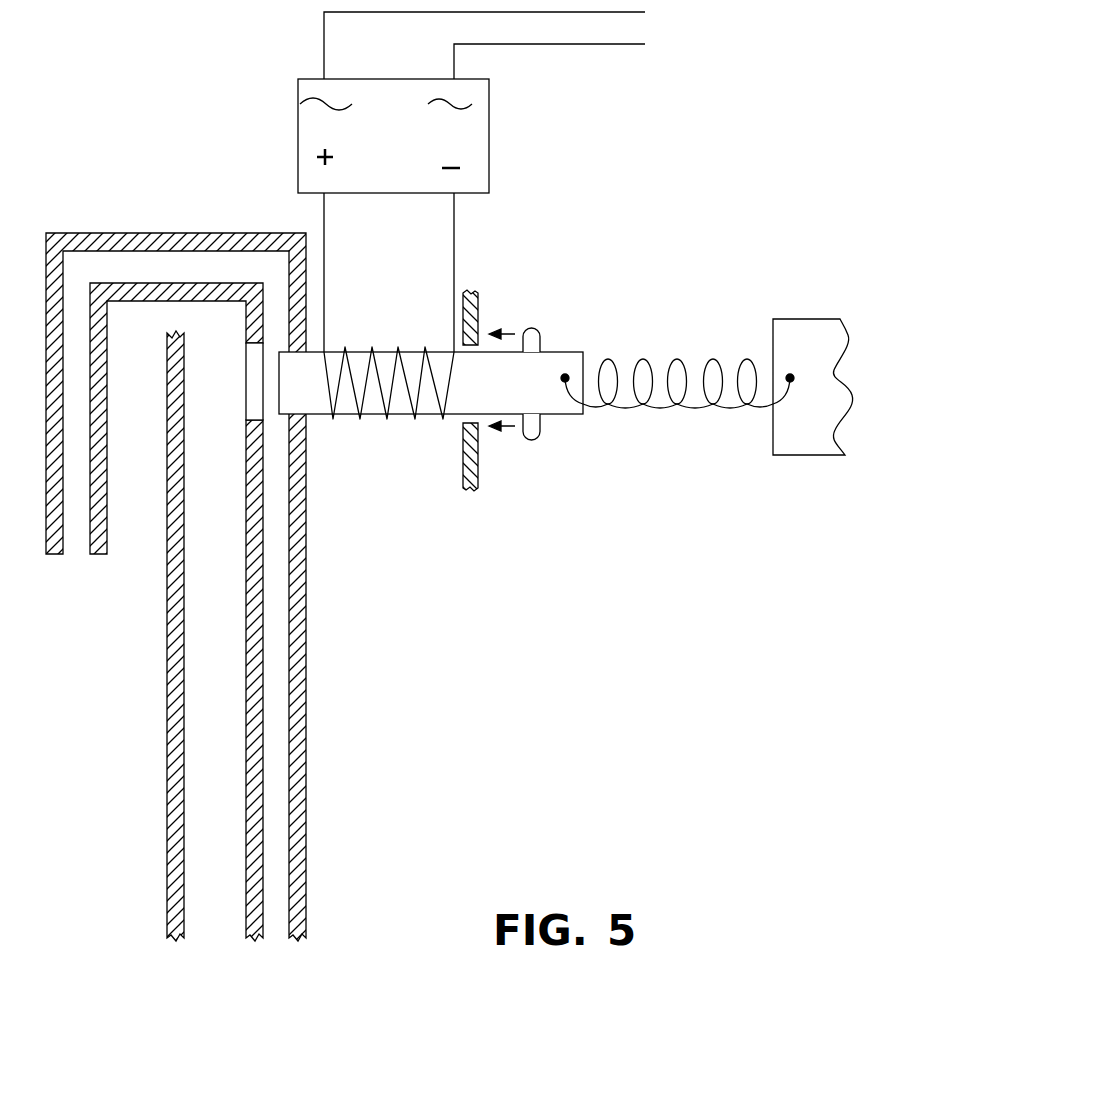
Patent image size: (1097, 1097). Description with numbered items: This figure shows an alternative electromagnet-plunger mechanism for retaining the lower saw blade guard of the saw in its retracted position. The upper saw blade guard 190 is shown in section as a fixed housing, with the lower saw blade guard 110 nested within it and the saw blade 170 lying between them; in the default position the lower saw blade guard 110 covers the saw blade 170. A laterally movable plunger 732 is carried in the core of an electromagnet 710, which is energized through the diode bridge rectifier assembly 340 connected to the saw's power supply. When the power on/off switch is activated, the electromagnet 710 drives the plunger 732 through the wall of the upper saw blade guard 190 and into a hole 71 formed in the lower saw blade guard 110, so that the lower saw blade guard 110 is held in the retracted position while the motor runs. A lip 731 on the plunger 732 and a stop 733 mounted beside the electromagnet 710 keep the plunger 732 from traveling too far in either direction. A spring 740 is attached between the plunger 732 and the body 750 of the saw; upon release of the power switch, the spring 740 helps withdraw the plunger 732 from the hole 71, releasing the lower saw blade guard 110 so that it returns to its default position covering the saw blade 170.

The upper saw blade guard 190 is at (144, 233).
The lower saw blade guard 110 is at (98, 555).
The hole 71 is at (252, 381).
The saw blade 170 is at (167, 766).
The diode bridge rectifier assembly 340 is at (490, 131).
The electromagnet 710 is at (365, 418).
The lip 731 is at (540, 334).
The plunger 732 is at (560, 422).
The stop 733 is at (478, 491).
The spring 740 is at (678, 355).
The body 750 is at (809, 318).